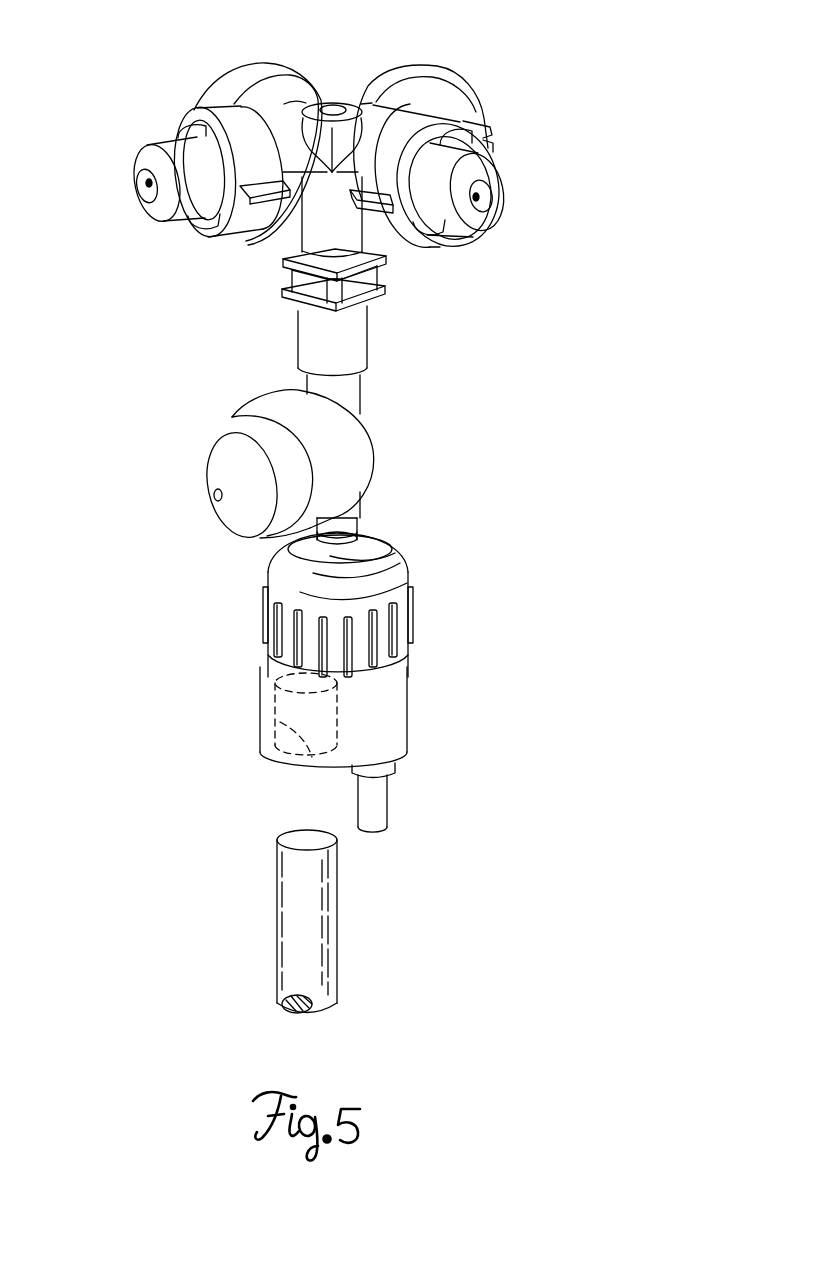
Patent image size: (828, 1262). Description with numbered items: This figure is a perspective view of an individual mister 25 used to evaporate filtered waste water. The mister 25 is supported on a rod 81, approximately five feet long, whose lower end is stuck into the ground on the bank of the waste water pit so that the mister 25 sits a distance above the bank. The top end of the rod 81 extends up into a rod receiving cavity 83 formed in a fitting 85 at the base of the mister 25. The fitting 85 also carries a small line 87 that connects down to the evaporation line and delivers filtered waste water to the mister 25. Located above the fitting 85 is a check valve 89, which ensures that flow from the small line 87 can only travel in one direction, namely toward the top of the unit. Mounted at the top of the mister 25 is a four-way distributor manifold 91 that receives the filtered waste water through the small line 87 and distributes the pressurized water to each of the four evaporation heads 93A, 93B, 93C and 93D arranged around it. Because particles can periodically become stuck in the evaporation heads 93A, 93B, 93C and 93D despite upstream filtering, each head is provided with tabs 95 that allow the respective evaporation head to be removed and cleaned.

The mister 25 is at (568, 125).
The rod 81 is at (275, 913).
The rod receiving cavity 83 is at (310, 742).
The fitting 85 is at (408, 682).
The small line 87 is at (390, 797).
The check valve 89 is at (346, 469).
The four-way distributor manifold 91 is at (332, 103).
The evaporation head 93A is at (238, 67).
The evaporation head 93B is at (140, 152).
The evaporation head 93C is at (468, 232).
The evaporation head 93D is at (447, 75).
The tabs 95 is at (180, 125).